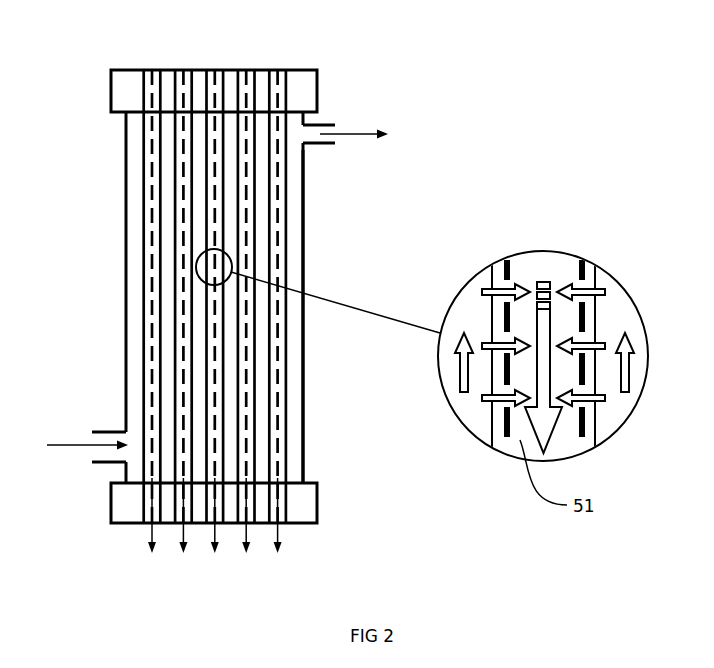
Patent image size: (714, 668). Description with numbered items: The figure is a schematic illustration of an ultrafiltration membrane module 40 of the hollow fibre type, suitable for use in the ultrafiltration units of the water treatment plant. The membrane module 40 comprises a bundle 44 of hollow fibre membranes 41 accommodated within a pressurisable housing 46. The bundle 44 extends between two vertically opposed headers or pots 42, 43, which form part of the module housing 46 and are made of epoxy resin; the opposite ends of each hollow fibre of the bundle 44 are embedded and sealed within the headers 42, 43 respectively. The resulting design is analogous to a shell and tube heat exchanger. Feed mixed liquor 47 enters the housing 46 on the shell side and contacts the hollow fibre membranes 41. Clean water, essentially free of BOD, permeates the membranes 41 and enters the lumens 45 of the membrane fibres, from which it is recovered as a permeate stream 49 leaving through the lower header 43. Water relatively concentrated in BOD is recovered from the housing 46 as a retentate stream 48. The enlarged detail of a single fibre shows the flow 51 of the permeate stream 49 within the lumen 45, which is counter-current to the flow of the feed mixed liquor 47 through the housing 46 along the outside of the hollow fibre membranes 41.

The ultrafiltration membrane module 40 is at (310, 435).
The hollow fibre membranes 41 is at (143, 295).
The header 42 is at (125, 92).
The header 43 is at (317, 503).
The bundle 44 is at (344, 271).
The lumens 45 is at (152, 202).
The housing 46 is at (303, 393).
The feed mixed liquor 47 is at (673, 397).
The retentate stream 48 is at (358, 135).
The permeate stream 49 is at (647, 462).
The flow 51 is at (520, 440).